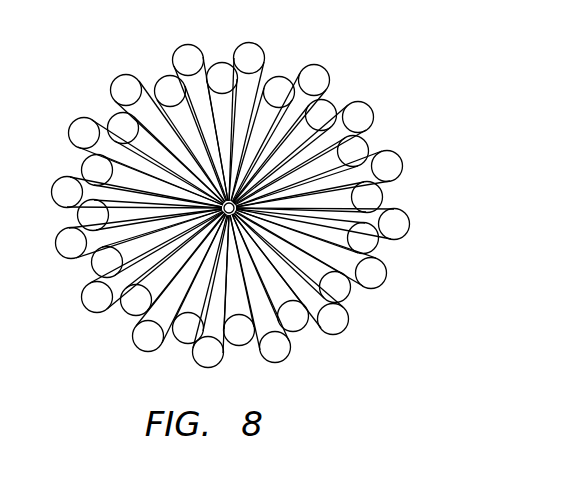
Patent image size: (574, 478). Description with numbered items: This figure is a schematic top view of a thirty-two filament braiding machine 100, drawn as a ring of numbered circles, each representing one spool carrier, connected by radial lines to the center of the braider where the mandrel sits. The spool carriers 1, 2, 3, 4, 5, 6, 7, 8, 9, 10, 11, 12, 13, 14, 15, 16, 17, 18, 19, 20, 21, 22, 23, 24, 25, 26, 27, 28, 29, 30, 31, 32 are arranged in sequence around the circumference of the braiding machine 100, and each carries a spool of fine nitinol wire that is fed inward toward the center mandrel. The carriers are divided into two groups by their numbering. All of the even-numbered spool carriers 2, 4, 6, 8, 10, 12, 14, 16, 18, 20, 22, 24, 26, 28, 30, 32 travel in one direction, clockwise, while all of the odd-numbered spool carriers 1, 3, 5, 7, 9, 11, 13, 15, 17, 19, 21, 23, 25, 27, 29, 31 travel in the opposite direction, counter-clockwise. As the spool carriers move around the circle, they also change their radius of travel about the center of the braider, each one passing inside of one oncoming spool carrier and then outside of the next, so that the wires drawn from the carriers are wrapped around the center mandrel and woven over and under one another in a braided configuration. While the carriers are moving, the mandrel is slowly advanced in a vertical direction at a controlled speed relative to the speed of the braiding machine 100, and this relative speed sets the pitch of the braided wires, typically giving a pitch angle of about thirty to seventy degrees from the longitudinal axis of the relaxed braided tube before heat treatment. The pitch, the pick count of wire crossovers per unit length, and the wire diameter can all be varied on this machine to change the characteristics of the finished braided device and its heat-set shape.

The braiding machine 100 is at (256, 205).
The spool carrier 1 is at (247, 122).
The spool carrier 2 is at (263, 140).
The spool carrier 3 is at (281, 134).
The spool carrier 4 is at (285, 152).
The spool carrier 5 is at (304, 154).
The spool carrier 6 is at (302, 171).
The spool carrier 7 is at (319, 179).
The spool carrier 8 is at (309, 197).
The spool carrier 9 is at (323, 224).
The spool carrier 10 is at (307, 231).
The spool carrier 11 is at (311, 249).
The spool carrier 12 is at (292, 257).
The spool carrier 13 is at (291, 274).
The spool carrier 14 is at (270, 273).
The spool carrier 15 is at (260, 288).
The spool carrier 16 is at (239, 280).
The spool carrier 17 is at (211, 291).
The spool carrier 18 is at (201, 279).
The spool carrier 19 is at (180, 283).
The spool carrier 20 is at (173, 264).
The spool carrier 21 is at (153, 262).
The spool carrier 22 is at (158, 244).
The spool carrier 23 is at (139, 234).
The spool carrier 24 is at (150, 215).
The spool carrier 25 is at (137, 193).
The spool carrier 26 is at (153, 181).
The spool carrier 27 is at (146, 162).
The spool carrier 28 is at (166, 159).
The spool carrier 29 is at (168, 139).
The spool carrier 30 is at (191, 139).
The spool carrier 31 is at (201, 123).
The spool carrier 32 is at (222, 132).